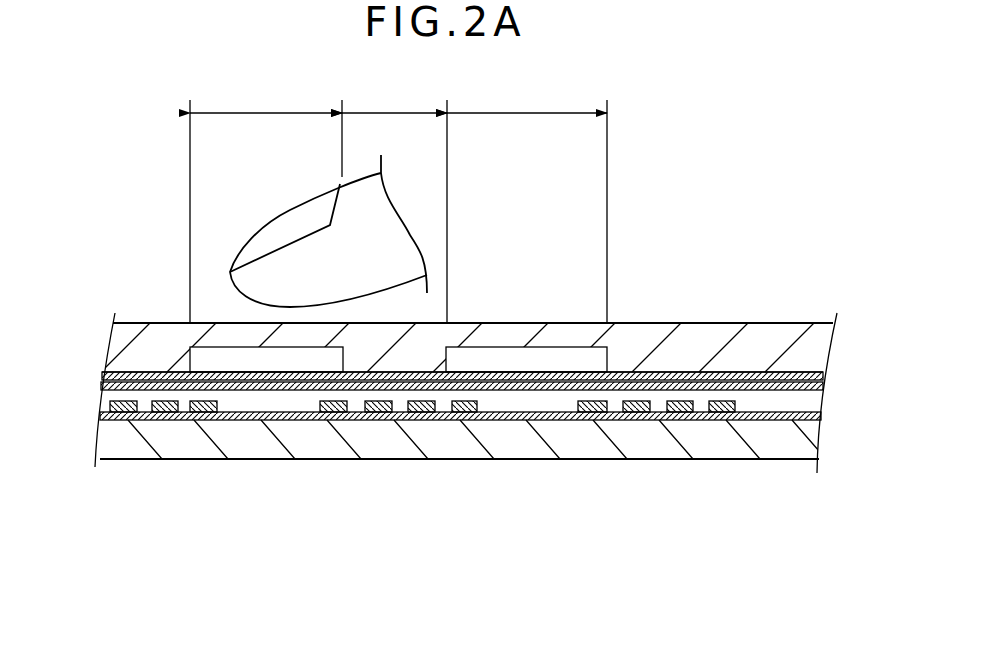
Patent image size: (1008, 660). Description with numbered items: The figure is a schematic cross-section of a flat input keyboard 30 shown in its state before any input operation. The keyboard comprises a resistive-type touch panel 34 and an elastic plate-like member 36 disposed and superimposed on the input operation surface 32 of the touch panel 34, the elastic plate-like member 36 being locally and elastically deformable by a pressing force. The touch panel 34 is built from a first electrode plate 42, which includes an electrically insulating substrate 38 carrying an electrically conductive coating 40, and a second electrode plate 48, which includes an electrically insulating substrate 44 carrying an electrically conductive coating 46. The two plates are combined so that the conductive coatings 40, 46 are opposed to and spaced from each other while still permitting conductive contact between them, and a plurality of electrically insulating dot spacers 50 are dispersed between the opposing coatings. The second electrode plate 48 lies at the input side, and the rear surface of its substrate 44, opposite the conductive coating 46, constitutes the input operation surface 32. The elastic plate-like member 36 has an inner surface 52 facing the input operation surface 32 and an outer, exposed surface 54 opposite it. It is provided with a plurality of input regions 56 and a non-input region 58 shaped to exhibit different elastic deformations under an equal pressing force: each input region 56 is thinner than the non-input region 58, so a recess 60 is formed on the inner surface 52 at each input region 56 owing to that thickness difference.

The flat input keyboard 30 is at (716, 277).
The input operation surface 32 is at (748, 373).
The resistive-type touch panel 34 is at (708, 462).
The elastic plate-like member 36 is at (770, 322).
The electrically insulating substrate 38 is at (225, 432).
The electrically conductive coating 40 is at (280, 420).
The first electrode plate 42 is at (463, 501).
The electrically insulating substrate 44 is at (485, 274).
The electrically conductive coating 46 is at (520, 375).
The second electrode plate 48 is at (462, 307).
The dot spacers 50 is at (402, 416).
The inner surface 52 is at (118, 390).
The outer surface 54 is at (162, 322).
The input regions 56 is at (398, 203).
The non-input region 58 is at (394, 130).
The recess 60 is at (237, 353).